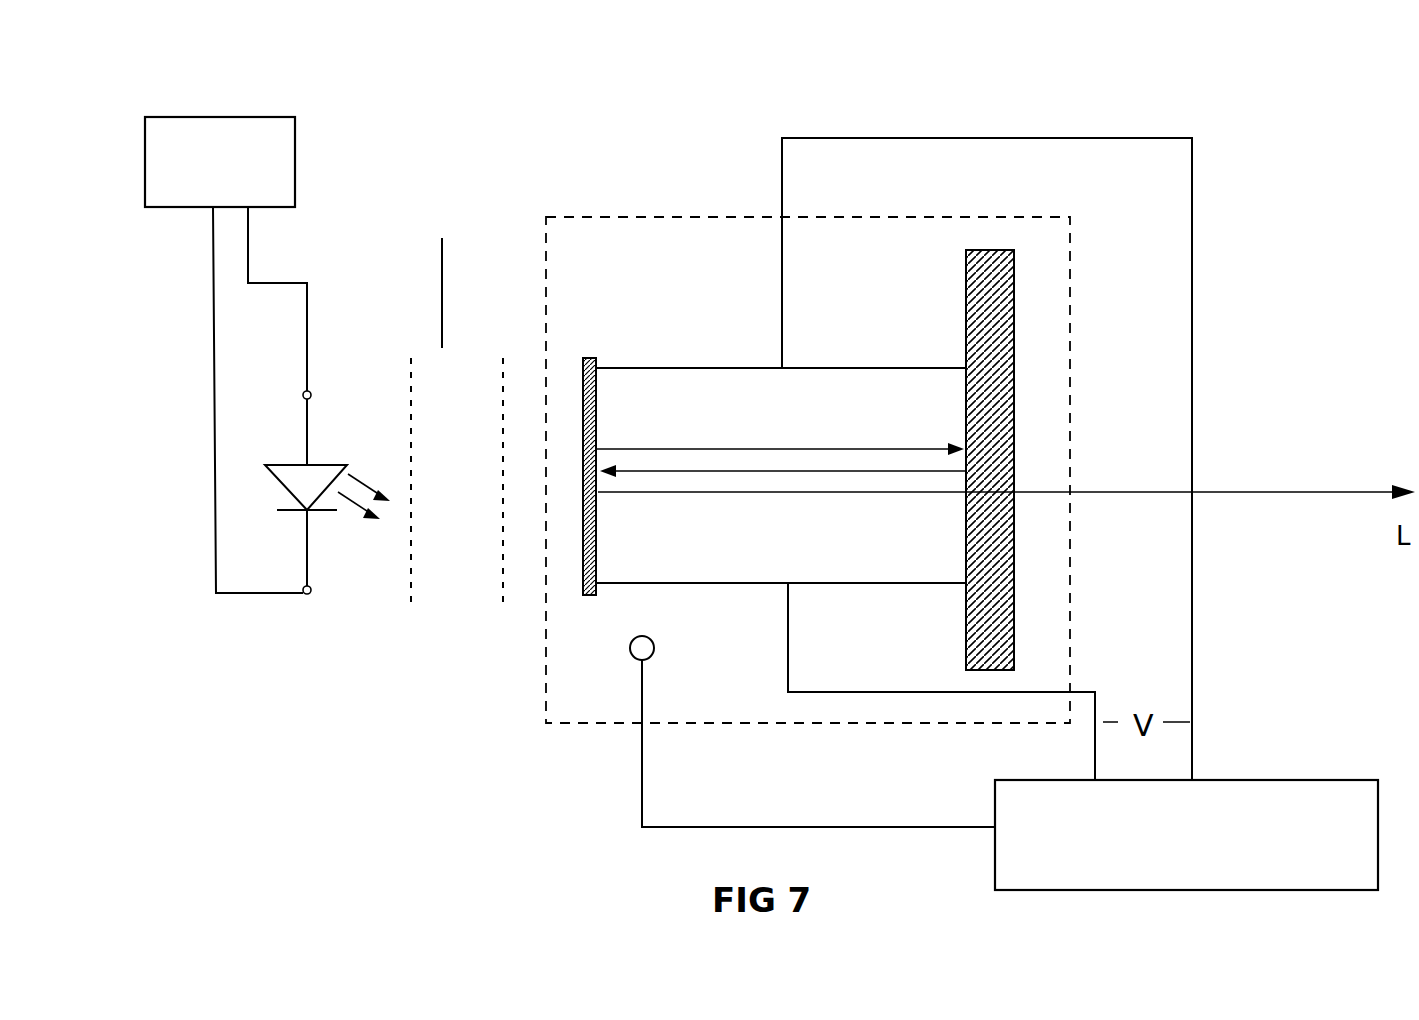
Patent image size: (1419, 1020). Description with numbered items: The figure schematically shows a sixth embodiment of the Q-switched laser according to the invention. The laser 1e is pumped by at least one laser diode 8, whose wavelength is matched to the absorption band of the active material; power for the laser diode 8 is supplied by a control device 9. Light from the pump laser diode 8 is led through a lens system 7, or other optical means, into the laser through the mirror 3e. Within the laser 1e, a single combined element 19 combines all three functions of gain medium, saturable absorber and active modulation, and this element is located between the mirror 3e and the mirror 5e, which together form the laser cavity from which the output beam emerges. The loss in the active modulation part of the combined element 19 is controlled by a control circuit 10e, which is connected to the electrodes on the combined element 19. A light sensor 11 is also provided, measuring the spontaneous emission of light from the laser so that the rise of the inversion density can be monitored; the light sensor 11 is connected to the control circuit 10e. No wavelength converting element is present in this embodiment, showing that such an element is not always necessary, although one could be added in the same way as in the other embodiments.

The control device 9 is at (202, 116).
The laser diode 8 is at (320, 522).
The lens system 7 is at (437, 272).
The laser 1e is at (545, 280).
The combined element 19 is at (727, 367).
The mirror 3e is at (583, 575).
The mirror 5e is at (1013, 333).
The control circuit 10e is at (1256, 780).
The light sensor 11 is at (812, 731).